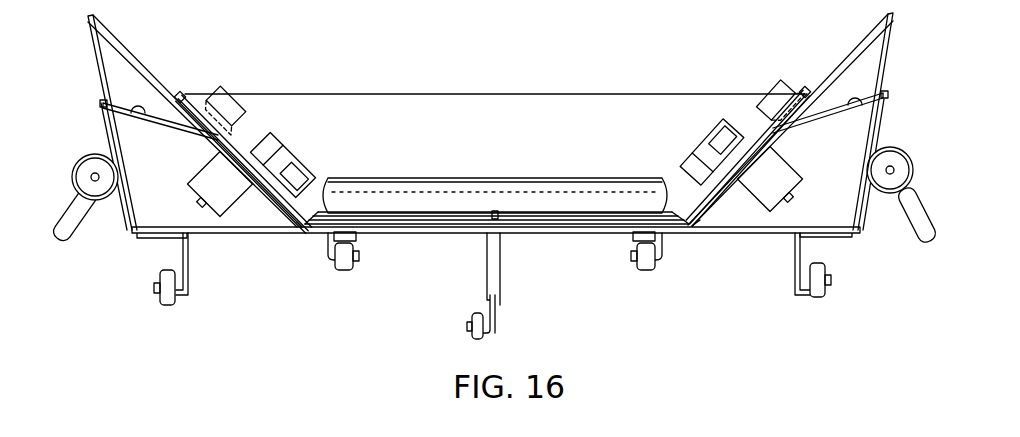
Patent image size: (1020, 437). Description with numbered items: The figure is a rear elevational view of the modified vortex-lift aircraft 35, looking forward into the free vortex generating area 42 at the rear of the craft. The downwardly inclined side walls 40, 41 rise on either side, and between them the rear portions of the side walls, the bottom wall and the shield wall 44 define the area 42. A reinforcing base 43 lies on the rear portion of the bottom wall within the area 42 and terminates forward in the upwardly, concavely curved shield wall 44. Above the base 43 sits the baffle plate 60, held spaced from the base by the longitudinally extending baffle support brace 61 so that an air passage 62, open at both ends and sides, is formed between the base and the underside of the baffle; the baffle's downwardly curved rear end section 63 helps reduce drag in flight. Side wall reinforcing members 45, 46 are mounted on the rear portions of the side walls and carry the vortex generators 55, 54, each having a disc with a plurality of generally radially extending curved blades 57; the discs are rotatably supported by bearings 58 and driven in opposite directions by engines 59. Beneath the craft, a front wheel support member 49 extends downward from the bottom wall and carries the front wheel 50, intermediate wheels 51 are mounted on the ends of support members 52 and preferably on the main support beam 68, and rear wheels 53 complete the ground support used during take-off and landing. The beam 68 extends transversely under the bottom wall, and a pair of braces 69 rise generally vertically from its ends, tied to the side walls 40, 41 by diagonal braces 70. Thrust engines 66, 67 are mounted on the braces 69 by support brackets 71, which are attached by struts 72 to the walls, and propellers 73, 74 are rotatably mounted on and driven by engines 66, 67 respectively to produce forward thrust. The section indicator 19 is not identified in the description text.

The section line 19 is at (790, 51).
The aircraft 35 is at (416, 88).
The side wall 40 is at (700, 224).
The side wall 41 is at (275, 220).
The free vortex generating area 42 is at (614, 148).
The reinforcing base 43 is at (380, 215).
The shield wall 44 is at (567, 128).
The side wall reinforcing member 45 is at (793, 113).
The side wall reinforcing member 46 is at (191, 93).
The front wheel support member 49 is at (500, 275).
The front wheel 50 is at (473, 331).
The intermediate wheels 51 is at (168, 301).
The support members 52 is at (188, 253).
The rear wheels 53 is at (343, 271).
The vortex generator 54 is at (287, 150).
The vortex generator 55 is at (733, 123).
The curved blades 57 is at (225, 105).
The bearings 58 is at (248, 192).
The engines 59 is at (211, 182).
The baffle plate 60 is at (393, 184).
The baffle support brace 61 is at (500, 218).
The air passage 62 is at (440, 213).
The rear end section 63 is at (575, 198).
The thrust engine 66 is at (897, 166).
The thrust engine 67 is at (91, 165).
The main support beam 68 is at (760, 238).
The braces 69 is at (97, 63).
The diagonal braces 70 is at (146, 68).
The support brackets 71 is at (124, 208).
The struts 72 is at (153, 125).
The propeller 73 is at (923, 219).
The propeller 74 is at (62, 246).